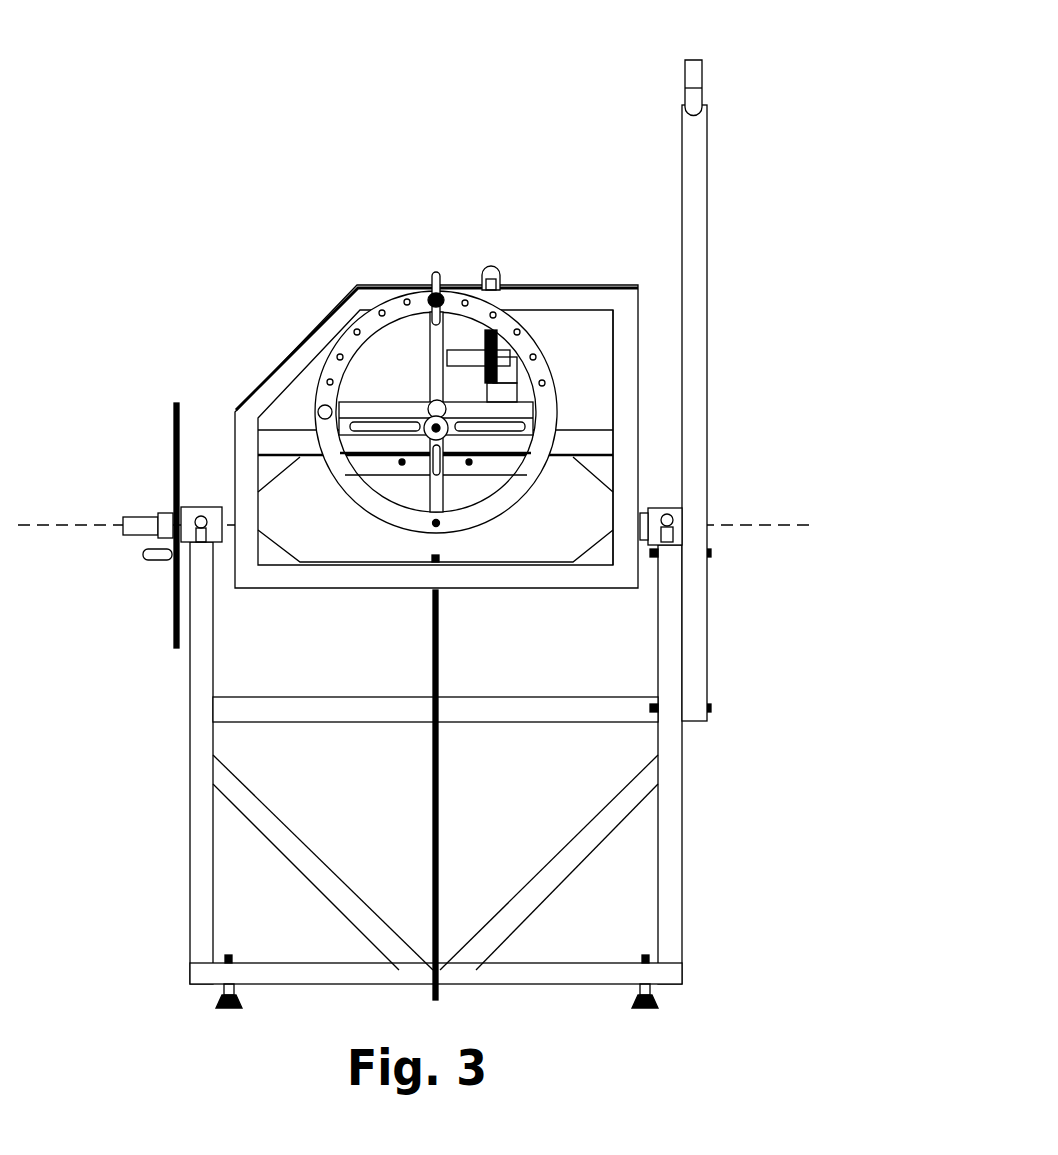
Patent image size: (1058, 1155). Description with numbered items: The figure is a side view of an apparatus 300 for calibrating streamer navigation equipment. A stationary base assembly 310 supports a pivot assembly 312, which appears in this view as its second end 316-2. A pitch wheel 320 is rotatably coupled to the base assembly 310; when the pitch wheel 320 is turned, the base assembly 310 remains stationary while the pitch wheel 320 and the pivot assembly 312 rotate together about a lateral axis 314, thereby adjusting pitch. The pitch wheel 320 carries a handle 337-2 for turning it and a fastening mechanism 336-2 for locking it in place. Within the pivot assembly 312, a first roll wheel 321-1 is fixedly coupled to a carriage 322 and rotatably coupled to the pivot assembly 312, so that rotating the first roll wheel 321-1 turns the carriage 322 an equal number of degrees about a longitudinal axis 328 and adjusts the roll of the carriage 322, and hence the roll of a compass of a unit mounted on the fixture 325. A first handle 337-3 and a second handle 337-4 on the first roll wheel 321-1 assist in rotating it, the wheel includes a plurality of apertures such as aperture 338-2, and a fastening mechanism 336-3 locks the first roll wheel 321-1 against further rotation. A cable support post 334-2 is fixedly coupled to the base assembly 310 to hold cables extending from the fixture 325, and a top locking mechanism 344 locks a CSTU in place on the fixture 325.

The apparatus 300 is at (232, 133).
The base assembly 310 is at (190, 748).
The pivot assembly 312 is at (306, 588).
The lateral axis 314 is at (188, 503).
The second end of the pivot assembly 316-2 is at (567, 588).
The pitch wheel 320 is at (173, 625).
The first roll wheel 321-1 is at (527, 483).
The carriage 322 is at (362, 468).
The fixture 325 is at (396, 427).
The longitudinal axis 328 is at (420, 388).
The cable support post 334-2 is at (692, 67).
The fastening mechanism 336-2 is at (143, 554).
The fastening mechanism 336-3 is at (437, 270).
The handle 337-2 is at (130, 517).
The first handle 337-3 is at (323, 405).
The second handle 337-4 is at (560, 408).
The aperture 338-2 is at (403, 282).
The top locking mechanism 344 is at (490, 268).